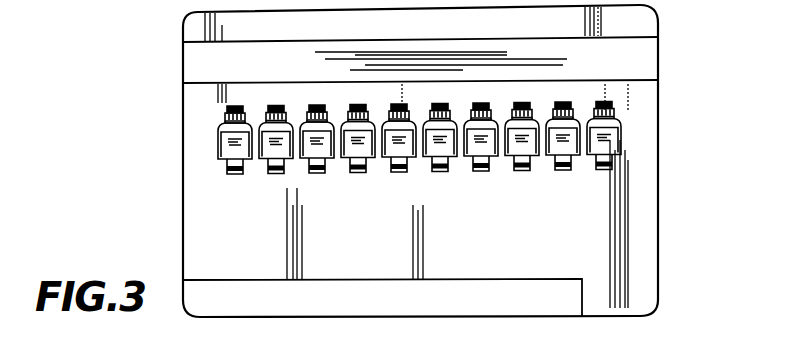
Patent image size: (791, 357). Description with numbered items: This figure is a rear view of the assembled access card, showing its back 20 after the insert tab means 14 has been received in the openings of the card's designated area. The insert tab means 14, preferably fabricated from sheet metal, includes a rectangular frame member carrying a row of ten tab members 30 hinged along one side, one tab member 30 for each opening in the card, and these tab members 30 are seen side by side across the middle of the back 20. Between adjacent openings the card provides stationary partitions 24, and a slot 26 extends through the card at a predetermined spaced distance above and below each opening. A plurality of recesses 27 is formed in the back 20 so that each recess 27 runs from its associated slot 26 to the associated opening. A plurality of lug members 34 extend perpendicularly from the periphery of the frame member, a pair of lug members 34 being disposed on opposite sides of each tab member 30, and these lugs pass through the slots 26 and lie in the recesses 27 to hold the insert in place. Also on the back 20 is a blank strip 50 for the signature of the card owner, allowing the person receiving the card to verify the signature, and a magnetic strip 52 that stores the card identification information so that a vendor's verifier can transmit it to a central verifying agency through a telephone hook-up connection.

The insert tab means 14 is at (255, 142).
The back 20 is at (583, 249).
The stationary partitions 24 is at (408, 110).
The slot 26 is at (245, 105).
The recesses 27 is at (226, 112).
The tab members 30 is at (228, 131).
The lug members 34 is at (236, 106).
The blank strip 50 is at (376, 308).
The magnetic strip 52 is at (303, 68).